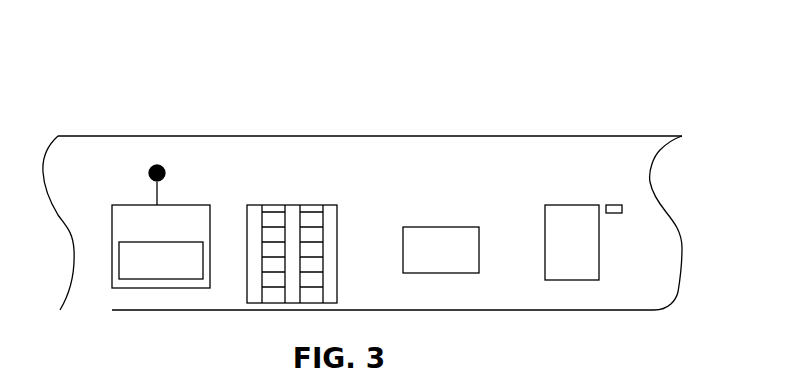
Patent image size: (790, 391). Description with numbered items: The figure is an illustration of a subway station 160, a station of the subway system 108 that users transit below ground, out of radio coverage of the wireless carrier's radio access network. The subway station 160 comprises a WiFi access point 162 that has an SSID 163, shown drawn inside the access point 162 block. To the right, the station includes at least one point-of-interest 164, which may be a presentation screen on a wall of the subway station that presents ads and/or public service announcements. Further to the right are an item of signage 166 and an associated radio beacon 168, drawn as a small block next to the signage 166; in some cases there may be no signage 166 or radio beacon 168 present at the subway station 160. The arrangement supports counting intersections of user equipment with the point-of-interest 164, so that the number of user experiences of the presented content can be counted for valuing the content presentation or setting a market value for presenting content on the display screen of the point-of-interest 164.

The subway station 160 is at (232, 85).
The subway system 108 is at (317, 140).
The WiFi access point (AP) 162 is at (128, 205).
The SSID 163 is at (148, 279).
The point-of-interest (POI) 164 is at (442, 227).
The item of signage 166 is at (570, 205).
The radio beacon 168 is at (615, 205).